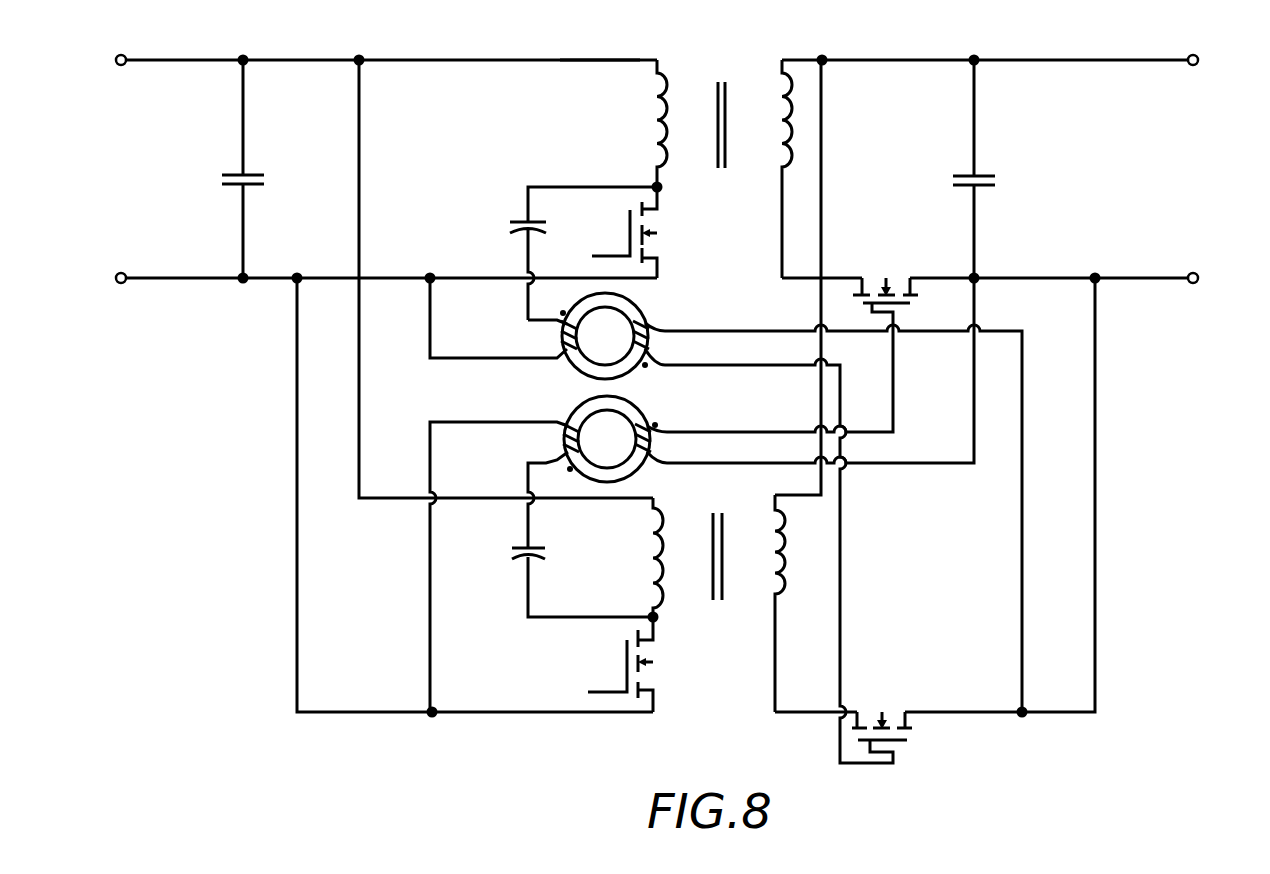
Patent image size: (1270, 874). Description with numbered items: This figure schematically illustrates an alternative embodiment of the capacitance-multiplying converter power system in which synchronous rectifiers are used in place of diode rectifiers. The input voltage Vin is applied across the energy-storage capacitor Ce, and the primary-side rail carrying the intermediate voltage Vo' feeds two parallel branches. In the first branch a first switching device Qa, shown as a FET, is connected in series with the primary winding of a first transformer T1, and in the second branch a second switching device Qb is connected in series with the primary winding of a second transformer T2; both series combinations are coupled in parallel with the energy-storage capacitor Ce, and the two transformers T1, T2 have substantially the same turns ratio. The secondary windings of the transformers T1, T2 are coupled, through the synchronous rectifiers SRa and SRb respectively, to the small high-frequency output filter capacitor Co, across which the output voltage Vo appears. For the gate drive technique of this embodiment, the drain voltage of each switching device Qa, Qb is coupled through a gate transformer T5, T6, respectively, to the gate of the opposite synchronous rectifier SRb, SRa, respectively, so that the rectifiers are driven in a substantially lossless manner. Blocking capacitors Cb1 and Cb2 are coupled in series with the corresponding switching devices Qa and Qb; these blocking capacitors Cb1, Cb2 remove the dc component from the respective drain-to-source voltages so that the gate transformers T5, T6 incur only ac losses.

The input voltage Vin is at (94, 160).
The output voltage Vo is at (1214, 163).
The intermediate output voltage Vo' is at (570, 38).
The energy-storage capacitor Ce is at (221, 169).
The blocking capacitor Cb1 is at (557, 253).
The blocking capacitor Cb2 is at (555, 579).
The first switching device Qa is at (646, 232).
The second switching device Qb is at (644, 664).
The first transformer T1 is at (724, 165).
The second transformer T2 is at (719, 599).
The gate transformer T5 is at (630, 297).
The gate transformer T6 is at (587, 402).
The synchronous rectifier SRa is at (885, 279).
The synchronous rectifier SRb is at (882, 713).
The output filter capacitor Co is at (950, 169).